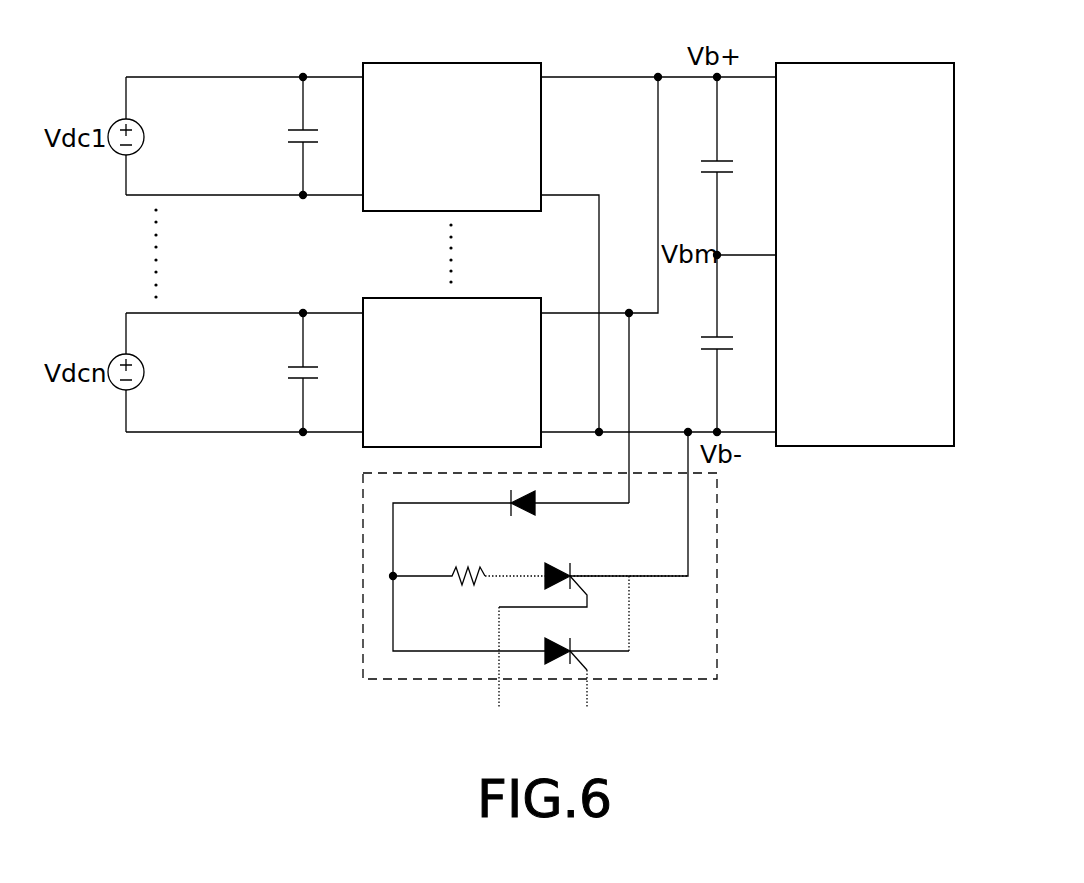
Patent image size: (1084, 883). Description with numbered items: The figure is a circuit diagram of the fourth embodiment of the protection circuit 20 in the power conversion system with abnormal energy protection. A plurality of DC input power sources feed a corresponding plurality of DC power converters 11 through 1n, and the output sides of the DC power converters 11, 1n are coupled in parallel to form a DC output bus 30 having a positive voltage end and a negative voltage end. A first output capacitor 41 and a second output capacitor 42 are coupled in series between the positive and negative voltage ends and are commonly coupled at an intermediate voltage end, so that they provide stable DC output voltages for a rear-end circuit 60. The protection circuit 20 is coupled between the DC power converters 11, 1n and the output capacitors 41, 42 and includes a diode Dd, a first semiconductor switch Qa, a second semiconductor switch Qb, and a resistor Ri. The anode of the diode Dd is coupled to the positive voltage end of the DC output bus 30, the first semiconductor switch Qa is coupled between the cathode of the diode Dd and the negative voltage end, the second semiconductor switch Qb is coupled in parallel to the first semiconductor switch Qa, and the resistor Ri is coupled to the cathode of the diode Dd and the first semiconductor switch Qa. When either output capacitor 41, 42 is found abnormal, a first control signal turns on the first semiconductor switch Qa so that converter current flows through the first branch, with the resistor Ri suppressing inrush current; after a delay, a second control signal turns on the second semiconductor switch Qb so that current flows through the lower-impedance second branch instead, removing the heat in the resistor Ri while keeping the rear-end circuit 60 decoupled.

The DC power converter 11 is at (452, 68).
The DC power converter 1n is at (463, 307).
The DC output bus 30 is at (749, 60).
The first output capacitor 41 is at (723, 157).
The second output capacitor 42 is at (723, 332).
The rear-end circuit 60 is at (864, 70).
The protection circuit 20 is at (593, 586).
The diode Dd is at (503, 495).
The resistor Ri is at (469, 560).
The first semiconductor switch Qa is at (593, 620).
The second semiconductor switch Qb is at (584, 641).